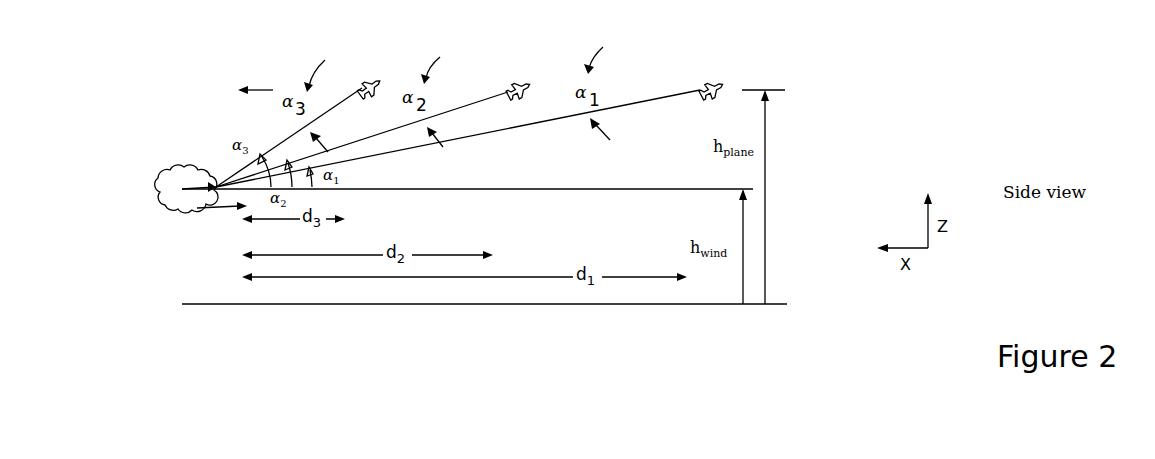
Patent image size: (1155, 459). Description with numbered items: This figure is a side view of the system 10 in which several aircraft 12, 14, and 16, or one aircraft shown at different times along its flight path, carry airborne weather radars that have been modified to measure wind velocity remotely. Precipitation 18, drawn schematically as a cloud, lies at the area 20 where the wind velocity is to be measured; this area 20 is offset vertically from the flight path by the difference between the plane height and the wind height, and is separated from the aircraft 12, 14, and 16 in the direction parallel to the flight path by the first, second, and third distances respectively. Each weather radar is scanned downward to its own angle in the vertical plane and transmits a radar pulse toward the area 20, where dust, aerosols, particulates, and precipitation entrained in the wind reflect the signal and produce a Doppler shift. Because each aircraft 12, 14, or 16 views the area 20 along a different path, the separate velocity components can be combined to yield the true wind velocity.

The system 10 is at (620, 173).
The aircraft 12 is at (718, 86).
The aircraft 14 is at (524, 86).
The aircraft 16 is at (375, 84).
The precipitation 18 is at (190, 168).
The area 20 is at (170, 248).